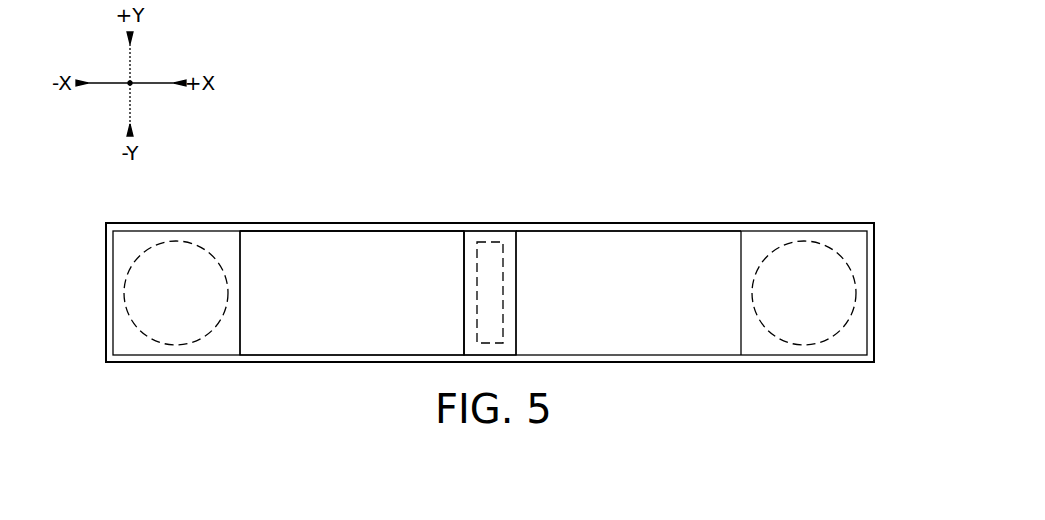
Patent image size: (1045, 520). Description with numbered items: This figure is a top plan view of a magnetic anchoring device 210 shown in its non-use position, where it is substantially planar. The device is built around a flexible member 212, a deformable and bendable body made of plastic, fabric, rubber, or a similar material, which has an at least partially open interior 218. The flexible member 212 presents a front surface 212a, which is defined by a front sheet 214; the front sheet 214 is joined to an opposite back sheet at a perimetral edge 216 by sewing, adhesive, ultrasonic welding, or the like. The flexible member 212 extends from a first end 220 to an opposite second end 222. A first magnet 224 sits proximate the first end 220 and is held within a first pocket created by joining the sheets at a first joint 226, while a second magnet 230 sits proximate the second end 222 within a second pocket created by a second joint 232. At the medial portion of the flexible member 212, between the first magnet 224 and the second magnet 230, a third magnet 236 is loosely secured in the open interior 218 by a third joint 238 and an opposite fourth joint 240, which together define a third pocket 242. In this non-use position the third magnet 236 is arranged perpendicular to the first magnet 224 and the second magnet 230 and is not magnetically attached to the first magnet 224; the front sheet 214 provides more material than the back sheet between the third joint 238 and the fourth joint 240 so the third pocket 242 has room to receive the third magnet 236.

The magnetic anchoring device 210 is at (694, 192).
The flexible member 212 is at (491, 222).
The front surface 212a is at (612, 240).
The front sheet 214 is at (127, 228).
The perimetral edge 216 is at (333, 230).
The open interior 218 is at (389, 240).
The first end 220 is at (106, 293).
The second end 222 is at (874, 293).
The first magnet 224 is at (176, 241).
The first joint 226 is at (240, 293).
The second magnet 230 is at (804, 240).
The second joint 232 is at (741, 343).
The third magnet 236 is at (505, 262).
The third joint 238 is at (464, 293).
The fourth joint 240 is at (516, 293).
The third pocket 242 is at (472, 240).